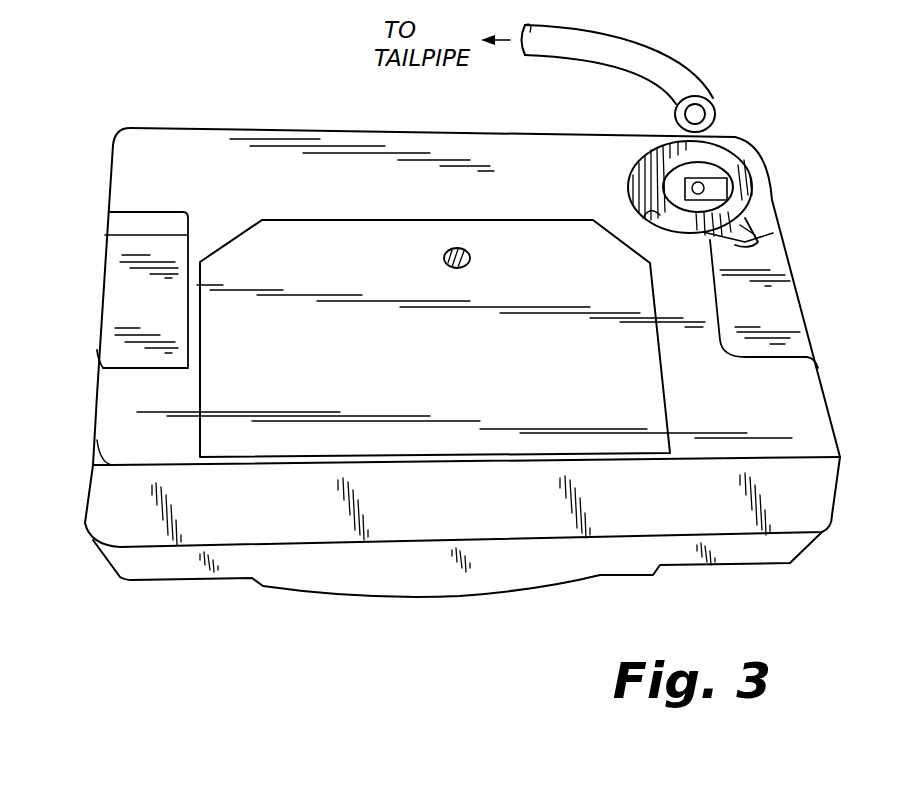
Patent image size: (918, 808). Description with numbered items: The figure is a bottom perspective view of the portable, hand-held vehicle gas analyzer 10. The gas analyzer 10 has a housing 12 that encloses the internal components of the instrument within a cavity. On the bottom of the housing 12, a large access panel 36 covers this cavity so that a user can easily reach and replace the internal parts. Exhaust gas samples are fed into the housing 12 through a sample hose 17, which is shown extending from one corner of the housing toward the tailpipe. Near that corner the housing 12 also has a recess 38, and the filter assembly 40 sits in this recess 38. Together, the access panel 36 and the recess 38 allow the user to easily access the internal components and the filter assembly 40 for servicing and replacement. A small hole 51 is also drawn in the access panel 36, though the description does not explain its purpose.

The hand-held vehicle gas analyzer 10 is at (292, 113).
The housing 12 is at (96, 388).
The sample hose 17 is at (670, 53).
The access panel 36 is at (457, 458).
The recess 38 is at (637, 176).
The filter assembly 40 is at (773, 200).
The drain hole 51 is at (468, 255).